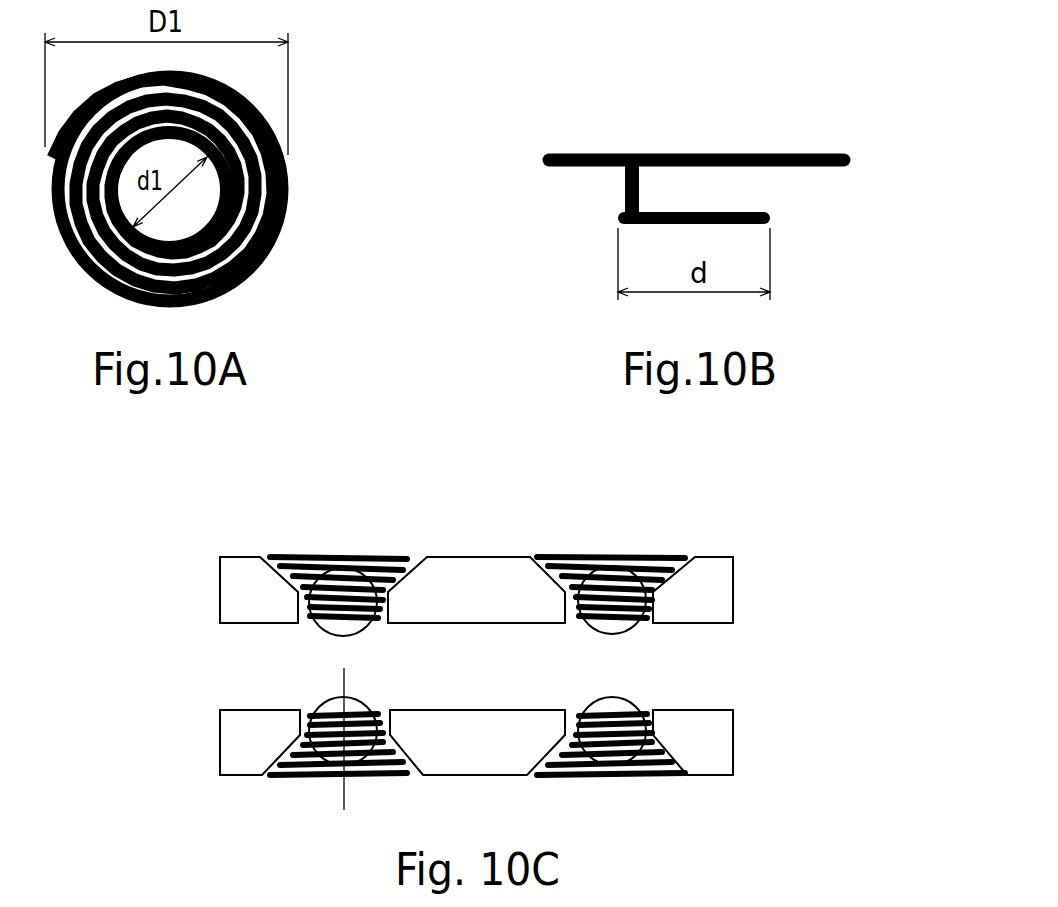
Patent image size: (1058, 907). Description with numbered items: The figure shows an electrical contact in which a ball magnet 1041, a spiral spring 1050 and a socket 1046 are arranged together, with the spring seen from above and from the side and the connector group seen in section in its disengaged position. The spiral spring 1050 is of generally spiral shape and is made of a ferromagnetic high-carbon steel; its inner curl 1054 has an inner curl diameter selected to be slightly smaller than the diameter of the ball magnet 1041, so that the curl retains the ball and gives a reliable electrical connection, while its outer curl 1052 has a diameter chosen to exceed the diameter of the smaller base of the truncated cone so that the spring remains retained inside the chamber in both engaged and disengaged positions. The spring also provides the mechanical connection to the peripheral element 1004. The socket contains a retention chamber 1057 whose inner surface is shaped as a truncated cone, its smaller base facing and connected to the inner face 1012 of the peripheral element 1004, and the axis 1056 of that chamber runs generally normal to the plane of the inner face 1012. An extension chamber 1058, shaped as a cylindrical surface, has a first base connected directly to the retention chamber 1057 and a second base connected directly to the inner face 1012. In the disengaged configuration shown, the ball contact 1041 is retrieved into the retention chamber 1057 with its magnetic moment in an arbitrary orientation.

In FIG. 10C, the peripheral element 1004 is at (520, 568).
In FIG. 10C, the inner face 1012 is at (500, 607).
In FIG. 10C, the ball magnet 1041 is at (343, 633).
In FIG. 10C, the socket 1046 is at (657, 590).
In FIG. 10A, the spiral spring 1050 is at (287, 180).
In FIG. 10B, the spiral spring 1050 is at (753, 166).
In FIG. 10C, the spiral spring 1050 is at (763, 525).
In FIG. 10B, the outer curl 1052 is at (772, 168).
In FIG. 10B, the inner curl 1054 is at (772, 222).
In FIG. 10C, the axis 1056 is at (343, 790).
In FIG. 10C, the retention chamber 1057 is at (387, 553).
In FIG. 10C, the extension chamber 1058 is at (575, 620).